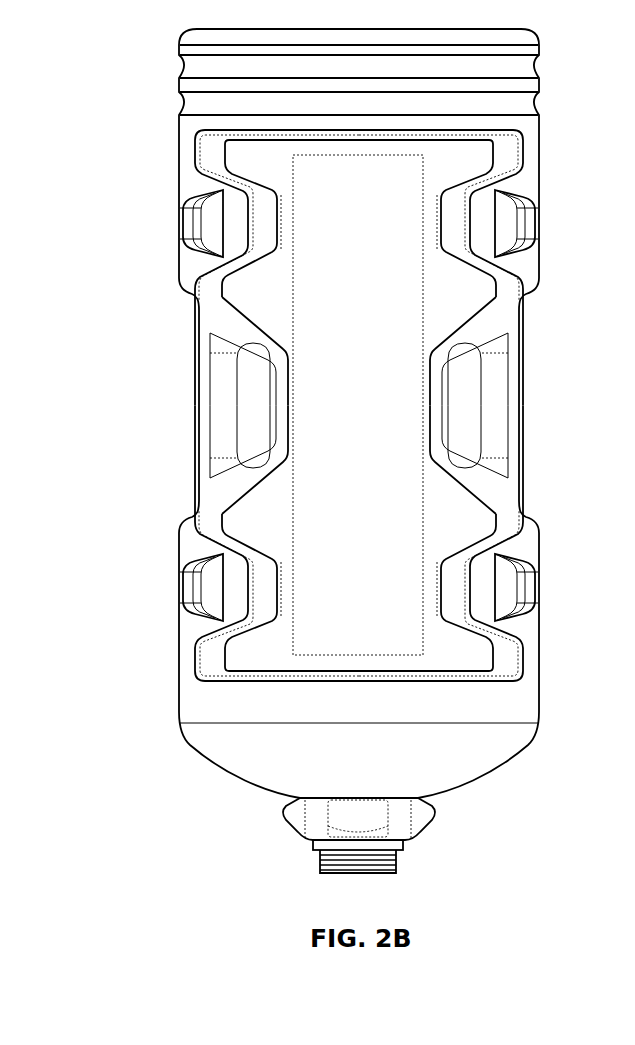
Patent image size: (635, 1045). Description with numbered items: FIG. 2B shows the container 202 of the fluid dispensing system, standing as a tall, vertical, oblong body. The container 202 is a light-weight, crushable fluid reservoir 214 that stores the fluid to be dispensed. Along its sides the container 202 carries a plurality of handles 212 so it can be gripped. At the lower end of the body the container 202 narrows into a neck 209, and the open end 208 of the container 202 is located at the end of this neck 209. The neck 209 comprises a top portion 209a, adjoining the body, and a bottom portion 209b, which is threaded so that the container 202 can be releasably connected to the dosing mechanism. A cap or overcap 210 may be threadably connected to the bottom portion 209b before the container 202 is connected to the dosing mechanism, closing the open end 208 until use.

The container 202 is at (146, 72).
The open end 208 is at (352, 876).
The neck 209 is at (270, 800).
The top portion 209a is at (404, 816).
The bottom portion 209b is at (383, 875).
The cap or overcap 210 is at (376, 248).
The handles 212 is at (220, 415).
The crushable fluid reservoir 214 is at (498, 600).